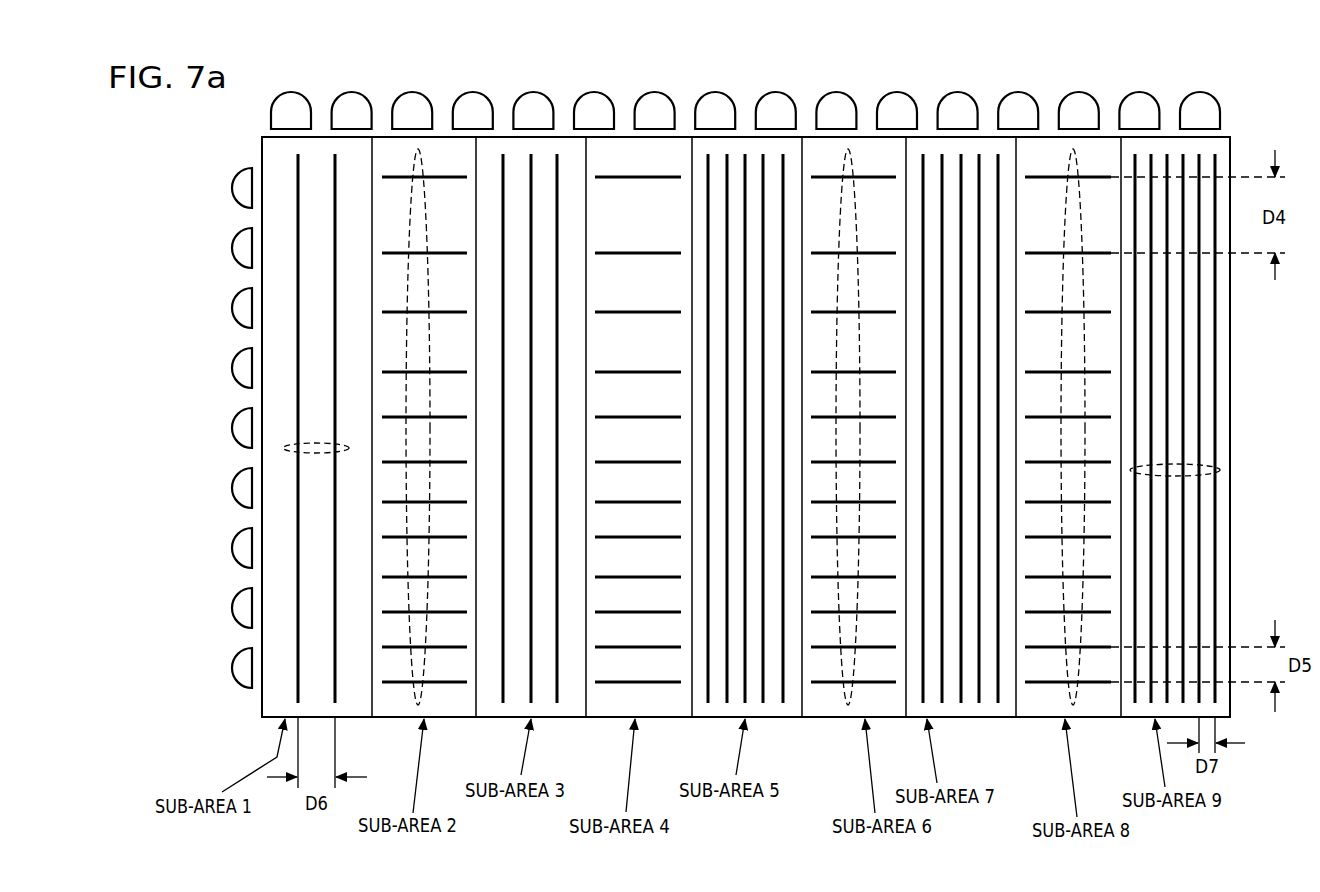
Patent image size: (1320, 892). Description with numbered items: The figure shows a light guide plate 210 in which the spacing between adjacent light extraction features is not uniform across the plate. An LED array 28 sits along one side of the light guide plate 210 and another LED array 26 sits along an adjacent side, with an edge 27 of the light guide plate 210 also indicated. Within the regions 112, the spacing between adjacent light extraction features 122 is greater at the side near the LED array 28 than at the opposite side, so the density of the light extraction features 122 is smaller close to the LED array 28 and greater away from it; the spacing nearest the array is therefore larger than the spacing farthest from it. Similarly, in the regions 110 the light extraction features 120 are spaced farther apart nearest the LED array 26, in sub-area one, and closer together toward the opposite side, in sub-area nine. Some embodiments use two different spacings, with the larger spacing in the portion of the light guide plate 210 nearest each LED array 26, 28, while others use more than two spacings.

The light guide plate 210 is at (1228, 75).
The panel edge / substrate 27 is at (1232, 137).
The LED array 28 is at (1158, 100).
The LED array 26 is at (222, 240).
The regions 110 is at (323, 153).
The regions 112 is at (631, 155).
The light extraction features 120 is at (283, 447).
The light extraction features 122 is at (417, 150).